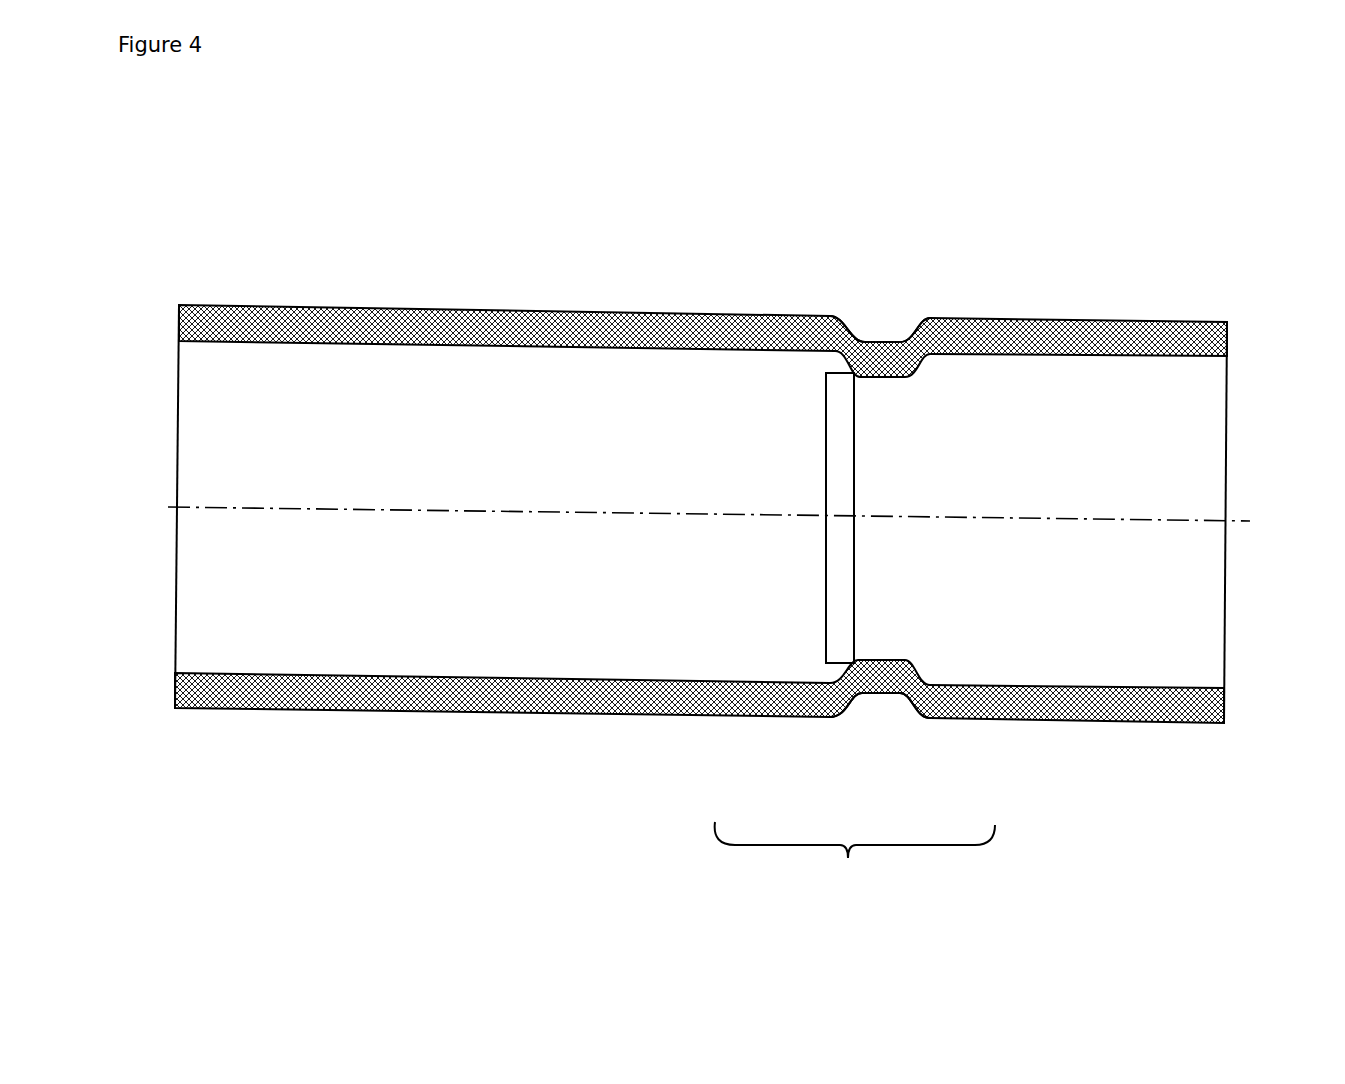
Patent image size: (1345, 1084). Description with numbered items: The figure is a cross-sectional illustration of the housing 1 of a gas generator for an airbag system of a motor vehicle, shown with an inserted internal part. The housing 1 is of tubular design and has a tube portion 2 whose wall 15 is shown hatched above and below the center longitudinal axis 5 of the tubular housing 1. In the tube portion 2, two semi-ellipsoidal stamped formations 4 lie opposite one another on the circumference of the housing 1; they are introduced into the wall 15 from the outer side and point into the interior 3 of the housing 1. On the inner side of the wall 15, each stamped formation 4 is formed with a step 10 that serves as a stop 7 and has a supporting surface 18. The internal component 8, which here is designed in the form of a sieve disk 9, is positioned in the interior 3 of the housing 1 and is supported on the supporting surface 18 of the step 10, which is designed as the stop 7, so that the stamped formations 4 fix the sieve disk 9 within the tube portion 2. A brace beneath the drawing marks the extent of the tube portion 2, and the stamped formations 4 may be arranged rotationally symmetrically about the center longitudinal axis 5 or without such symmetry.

The housing 1 is at (320, 240).
The tube portion 2 is at (855, 887).
The interior 3 is at (1220, 460).
The stamped formations 4 is at (910, 268).
The center longitudinal axis 5 is at (327, 508).
The stop 7 is at (968, 518).
The internal component 8 is at (772, 436).
The sieve disk 9 is at (848, 428).
The step 10 is at (968, 518).
The wall 15 is at (455, 305).
The supporting surface 18 is at (856, 401).